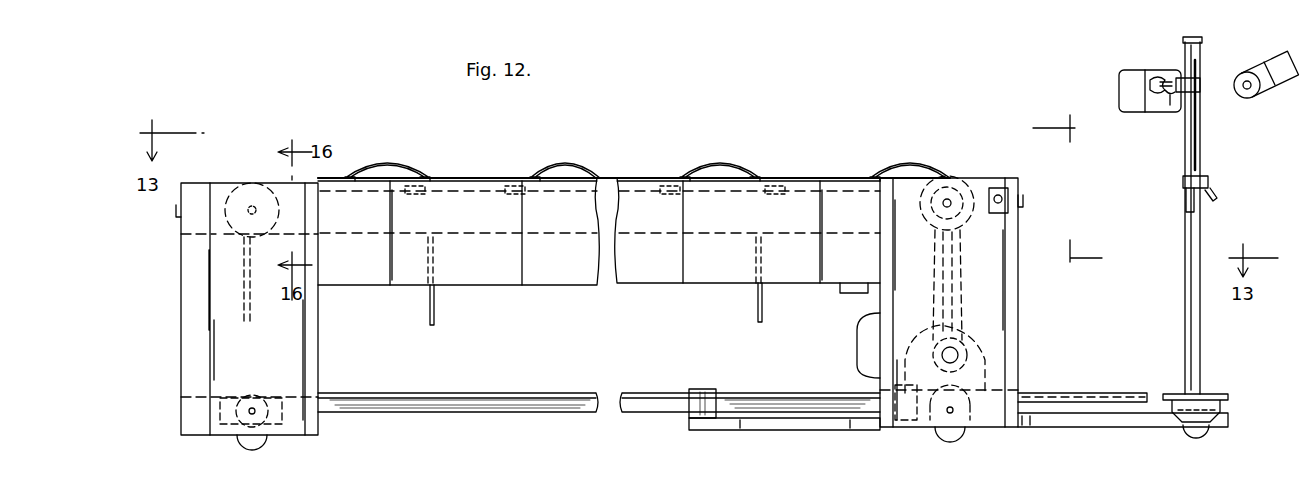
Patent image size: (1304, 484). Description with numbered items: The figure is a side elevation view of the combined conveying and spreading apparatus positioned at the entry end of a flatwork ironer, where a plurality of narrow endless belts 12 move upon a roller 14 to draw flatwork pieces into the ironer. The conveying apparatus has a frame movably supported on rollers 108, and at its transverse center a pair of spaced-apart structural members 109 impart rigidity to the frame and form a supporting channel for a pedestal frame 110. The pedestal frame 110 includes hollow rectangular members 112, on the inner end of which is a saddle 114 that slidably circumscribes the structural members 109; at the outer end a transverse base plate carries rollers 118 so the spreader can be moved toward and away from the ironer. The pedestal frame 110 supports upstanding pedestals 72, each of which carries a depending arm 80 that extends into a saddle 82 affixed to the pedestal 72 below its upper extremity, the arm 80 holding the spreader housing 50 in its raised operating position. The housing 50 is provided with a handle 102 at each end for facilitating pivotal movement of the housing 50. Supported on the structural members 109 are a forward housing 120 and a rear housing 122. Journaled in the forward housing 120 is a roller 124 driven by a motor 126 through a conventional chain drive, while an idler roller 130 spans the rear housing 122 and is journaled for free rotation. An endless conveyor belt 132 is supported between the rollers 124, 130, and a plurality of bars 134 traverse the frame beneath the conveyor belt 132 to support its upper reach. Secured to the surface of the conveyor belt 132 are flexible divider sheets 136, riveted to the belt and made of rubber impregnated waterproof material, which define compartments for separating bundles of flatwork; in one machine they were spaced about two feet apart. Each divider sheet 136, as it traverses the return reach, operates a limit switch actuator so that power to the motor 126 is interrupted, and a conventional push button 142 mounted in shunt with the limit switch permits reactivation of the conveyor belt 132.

The endless belts 12 is at (1264, 70).
The roller 14 is at (1243, 78).
The housing 50 is at (1166, 102).
The pedestals 72 is at (1185, 55).
The depending arm 80 is at (1195, 130).
The saddle 82 is at (1182, 183).
The handle 102 is at (1118, 86).
The rollers 108 is at (252, 440).
The structural members 109 is at (640, 394).
The pedestal frame 110 is at (1109, 428).
The hollow rectangular members 112 is at (806, 430).
The saddle 114 is at (703, 392).
The rollers 118 is at (1196, 437).
The forward housing 120 is at (1010, 338).
The rear housing 122 is at (195, 322).
The roller 124 is at (953, 186).
The motor 126 is at (860, 342).
The idler roller 130 is at (248, 194).
The conveyor belt 132 is at (493, 177).
The bars 134 is at (599, 251).
The divider sheets 136 is at (250, 310).
The push button 142 is at (999, 194).